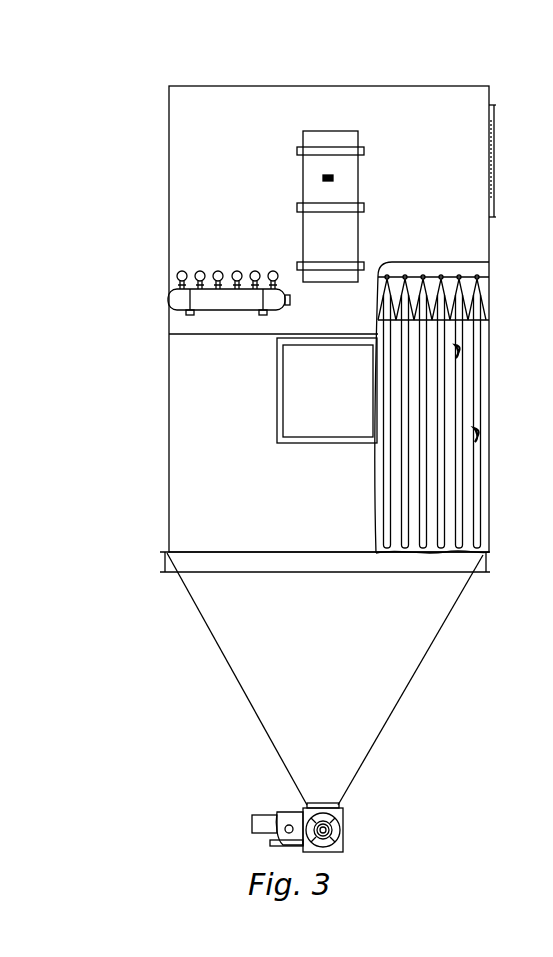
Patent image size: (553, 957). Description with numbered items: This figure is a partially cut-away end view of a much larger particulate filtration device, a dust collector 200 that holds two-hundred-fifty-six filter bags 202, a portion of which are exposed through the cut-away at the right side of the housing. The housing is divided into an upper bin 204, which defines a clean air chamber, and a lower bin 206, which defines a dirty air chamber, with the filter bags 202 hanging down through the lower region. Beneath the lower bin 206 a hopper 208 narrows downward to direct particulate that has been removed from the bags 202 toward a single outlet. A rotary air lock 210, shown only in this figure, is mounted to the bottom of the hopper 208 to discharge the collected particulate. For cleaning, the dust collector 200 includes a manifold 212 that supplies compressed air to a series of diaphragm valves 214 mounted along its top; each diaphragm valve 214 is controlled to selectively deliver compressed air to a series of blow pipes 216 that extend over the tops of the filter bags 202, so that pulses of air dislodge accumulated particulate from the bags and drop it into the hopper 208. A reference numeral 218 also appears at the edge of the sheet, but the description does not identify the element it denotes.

The dust collector 200 is at (86, 116).
The filter bags 202 is at (477, 519).
The upper bin 204 is at (183, 187).
The lower bin 206 is at (180, 451).
The hopper 208 is at (248, 674).
The rotary air lock 210 is at (344, 821).
The manifold 212 is at (217, 300).
The diaphragm valves 214 is at (183, 272).
The blow pipes 216 is at (406, 275).
The outlet duct 218 is at (521, 187).